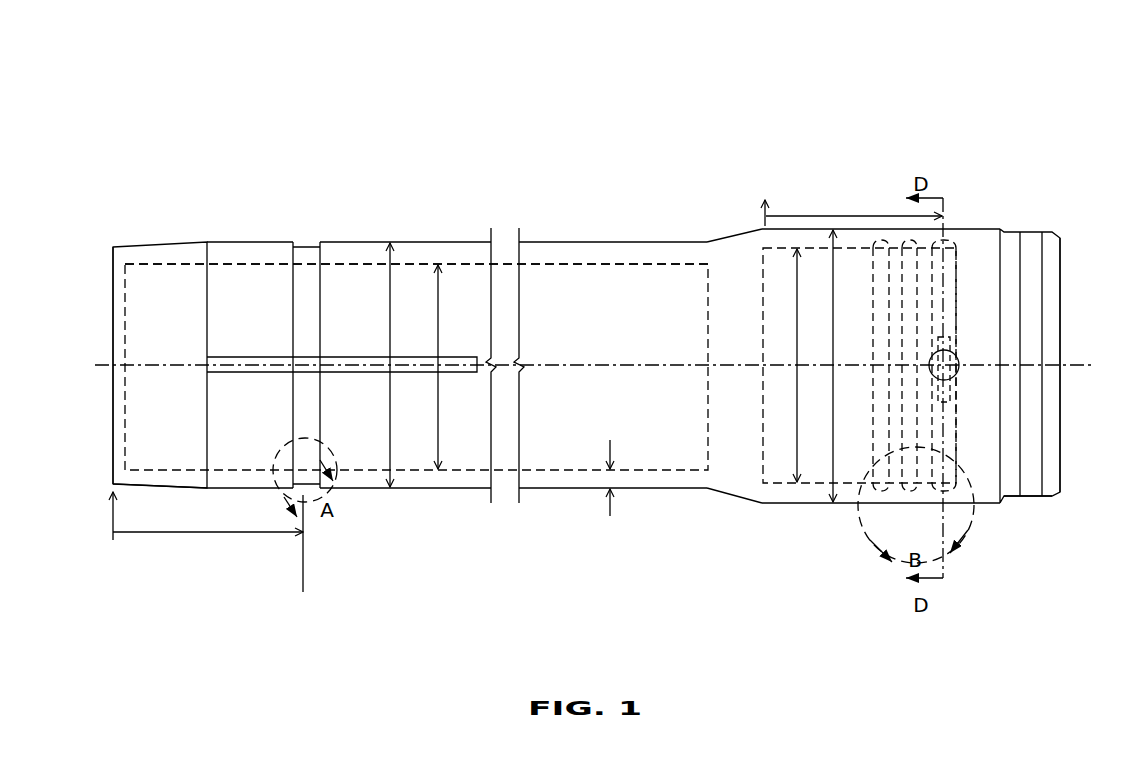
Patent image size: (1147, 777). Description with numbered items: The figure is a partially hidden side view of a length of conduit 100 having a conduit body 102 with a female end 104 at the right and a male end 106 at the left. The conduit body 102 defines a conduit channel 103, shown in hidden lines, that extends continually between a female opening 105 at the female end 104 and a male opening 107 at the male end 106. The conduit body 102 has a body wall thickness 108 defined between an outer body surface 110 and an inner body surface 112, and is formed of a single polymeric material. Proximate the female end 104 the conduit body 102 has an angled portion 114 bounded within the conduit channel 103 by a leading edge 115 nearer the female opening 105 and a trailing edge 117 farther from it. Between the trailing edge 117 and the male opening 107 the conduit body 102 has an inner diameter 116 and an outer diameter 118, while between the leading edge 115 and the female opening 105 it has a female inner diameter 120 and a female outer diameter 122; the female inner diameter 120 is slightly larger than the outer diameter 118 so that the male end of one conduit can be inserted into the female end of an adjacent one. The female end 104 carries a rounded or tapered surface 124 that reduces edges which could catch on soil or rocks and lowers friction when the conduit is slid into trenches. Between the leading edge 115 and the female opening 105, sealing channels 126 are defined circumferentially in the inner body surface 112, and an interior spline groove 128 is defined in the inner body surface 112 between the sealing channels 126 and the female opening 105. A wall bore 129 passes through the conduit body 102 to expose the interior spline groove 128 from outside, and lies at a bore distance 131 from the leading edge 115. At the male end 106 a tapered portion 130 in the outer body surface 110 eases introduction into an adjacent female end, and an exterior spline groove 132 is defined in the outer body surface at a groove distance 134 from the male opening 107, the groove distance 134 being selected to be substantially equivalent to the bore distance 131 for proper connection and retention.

The length of conduit 100 is at (683, 80).
The conduit body 102 is at (670, 489).
The conduit channel 103 is at (583, 311).
The female end 104 is at (1038, 497).
The female opening 105 is at (1062, 447).
The male end 106 is at (121, 486).
The male opening 107 is at (113, 381).
The body wall thickness 108 is at (606, 516).
The outer body surface 110 is at (534, 241).
The inner body surface 112 is at (565, 266).
The angled portion 114 is at (737, 498).
The leading edge 115 is at (775, 504).
The inner diameter 116 is at (444, 430).
The trailing edge 117 is at (718, 240).
The outer diameter 118 is at (385, 502).
The female inner diameter 120 is at (796, 287).
The female outer diameter 122 is at (834, 464).
The rounded or tapered surface 124 is at (1033, 232).
The sealing channels 126 is at (884, 214).
The interior spline groove 128 is at (956, 258).
The wall bore 129 is at (959, 363).
The tapered portion 130 is at (116, 246).
The bore distance 131 is at (815, 214).
The exterior spline groove 132 is at (300, 246).
The groove distance 134 is at (218, 533).